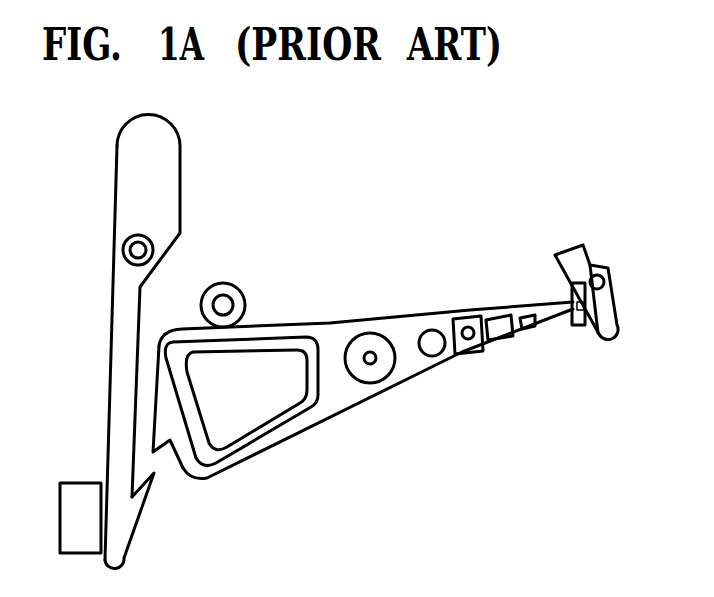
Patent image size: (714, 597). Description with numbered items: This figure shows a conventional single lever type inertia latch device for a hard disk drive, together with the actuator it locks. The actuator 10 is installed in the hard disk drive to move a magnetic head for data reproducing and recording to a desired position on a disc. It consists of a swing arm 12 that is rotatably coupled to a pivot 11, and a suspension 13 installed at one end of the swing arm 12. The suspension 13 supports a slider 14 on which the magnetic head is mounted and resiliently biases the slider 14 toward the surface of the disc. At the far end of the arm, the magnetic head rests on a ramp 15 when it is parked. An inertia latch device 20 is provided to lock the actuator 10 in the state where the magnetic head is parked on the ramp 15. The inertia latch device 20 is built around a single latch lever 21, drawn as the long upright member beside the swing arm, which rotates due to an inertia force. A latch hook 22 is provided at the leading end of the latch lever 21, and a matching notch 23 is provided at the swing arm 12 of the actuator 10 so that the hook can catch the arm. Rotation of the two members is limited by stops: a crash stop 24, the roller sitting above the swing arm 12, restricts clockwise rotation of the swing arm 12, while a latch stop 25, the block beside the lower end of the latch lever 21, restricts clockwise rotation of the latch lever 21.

The actuator 10 is at (372, 342).
The pivot 11 is at (368, 355).
The swing arm 12 is at (415, 372).
The suspension 13 is at (540, 323).
The slider 14 is at (576, 303).
The ramp 15 is at (615, 308).
The inertia latch device 20 is at (123, 342).
The latch lever 21 is at (118, 313).
The latch hook 22 is at (147, 496).
The notch 23 is at (156, 442).
The crash stop 24 is at (230, 282).
The latch stop 25 is at (77, 485).